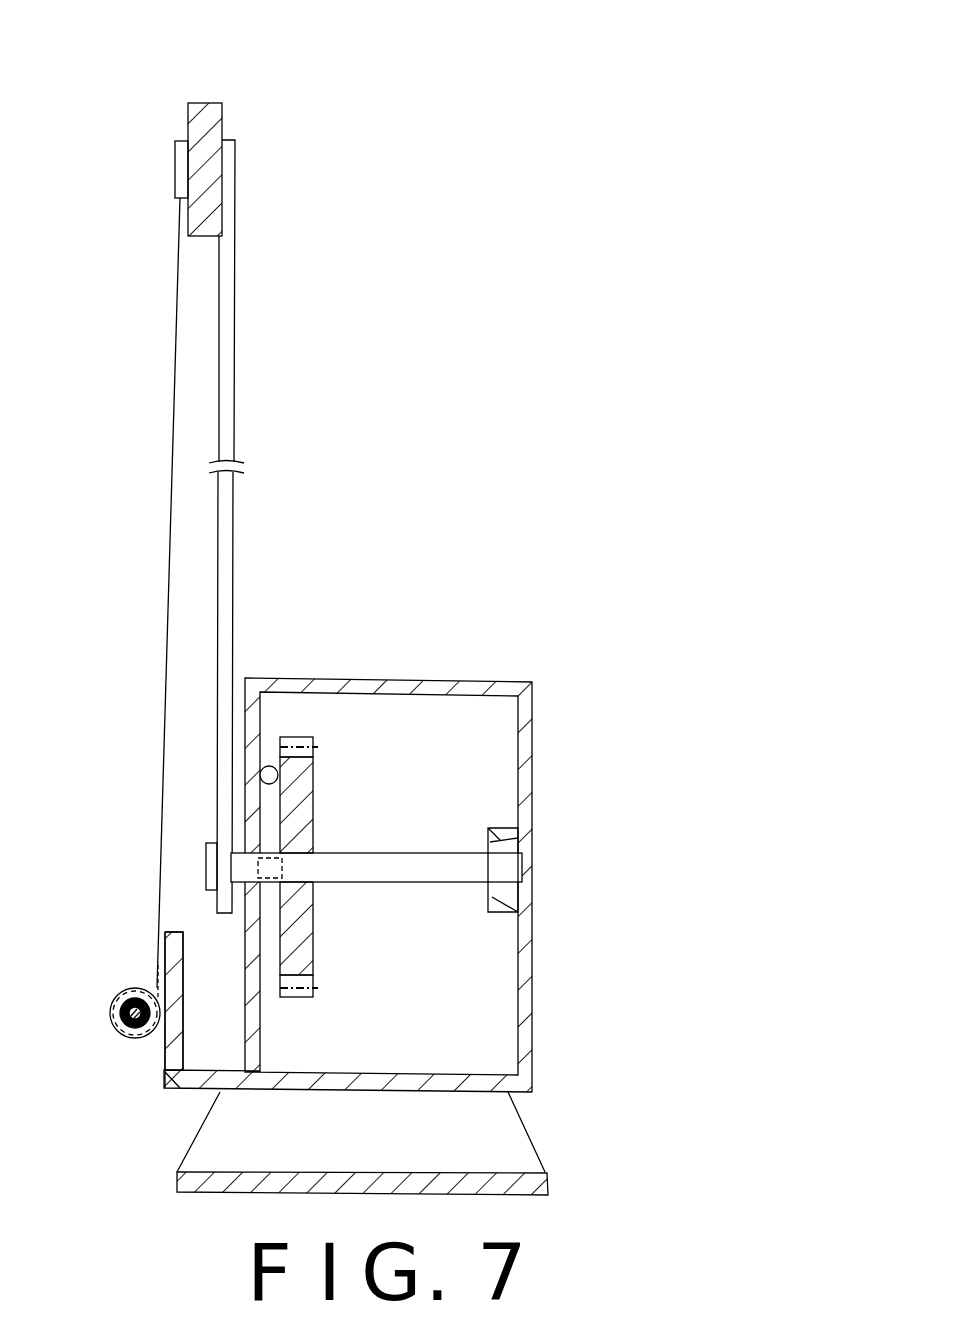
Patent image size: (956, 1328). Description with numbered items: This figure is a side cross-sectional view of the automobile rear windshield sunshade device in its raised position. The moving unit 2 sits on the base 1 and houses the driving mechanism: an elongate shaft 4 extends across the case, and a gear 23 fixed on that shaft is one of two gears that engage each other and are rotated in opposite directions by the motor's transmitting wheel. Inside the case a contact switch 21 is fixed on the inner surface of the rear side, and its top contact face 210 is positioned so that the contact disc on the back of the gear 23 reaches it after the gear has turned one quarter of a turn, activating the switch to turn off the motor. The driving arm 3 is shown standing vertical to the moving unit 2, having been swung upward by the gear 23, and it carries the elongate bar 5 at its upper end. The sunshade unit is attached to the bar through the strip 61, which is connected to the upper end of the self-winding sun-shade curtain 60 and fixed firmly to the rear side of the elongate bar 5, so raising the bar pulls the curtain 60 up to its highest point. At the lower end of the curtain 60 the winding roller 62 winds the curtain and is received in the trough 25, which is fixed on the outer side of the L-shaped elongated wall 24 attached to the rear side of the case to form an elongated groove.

The base 1 is at (543, 1173).
The moving unit 2 is at (540, 697).
The driving arm 3 is at (240, 375).
The elongate shaft 4 is at (505, 870).
The elongate bar 5 is at (207, 110).
The contact switch 21 is at (265, 764).
The gear 23 is at (303, 772).
The L-shaped elongated wall 24 is at (166, 1086).
The trough 25 is at (128, 1042).
The sun-shade curtain 60 is at (172, 368).
The strip 61 is at (178, 160).
The winding roller 62 is at (125, 997).
The contact face 210 is at (273, 762).